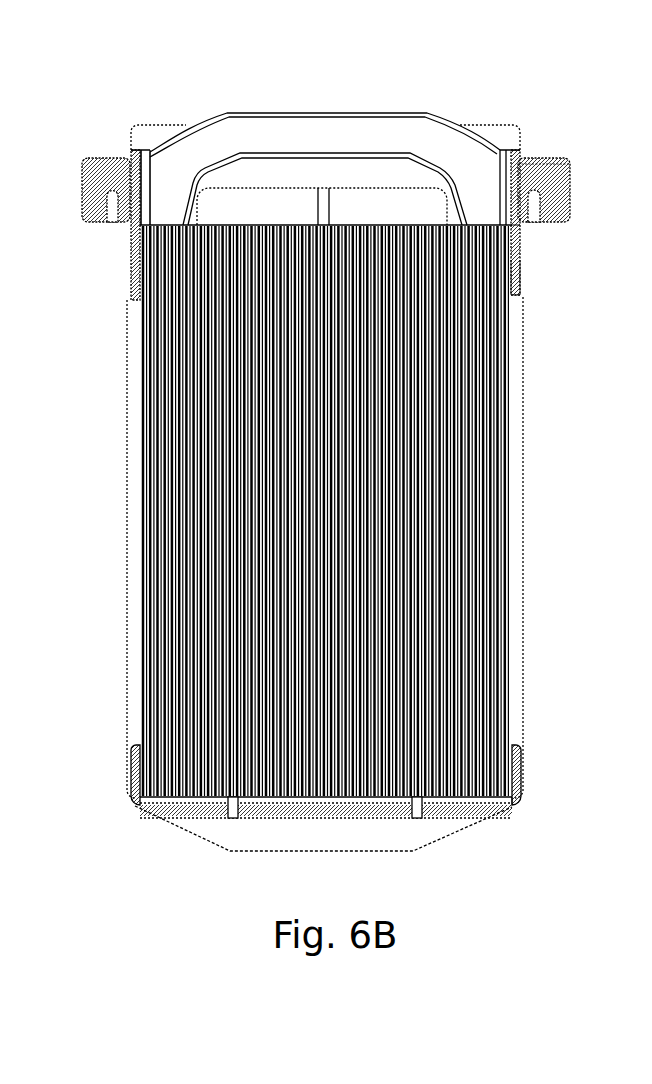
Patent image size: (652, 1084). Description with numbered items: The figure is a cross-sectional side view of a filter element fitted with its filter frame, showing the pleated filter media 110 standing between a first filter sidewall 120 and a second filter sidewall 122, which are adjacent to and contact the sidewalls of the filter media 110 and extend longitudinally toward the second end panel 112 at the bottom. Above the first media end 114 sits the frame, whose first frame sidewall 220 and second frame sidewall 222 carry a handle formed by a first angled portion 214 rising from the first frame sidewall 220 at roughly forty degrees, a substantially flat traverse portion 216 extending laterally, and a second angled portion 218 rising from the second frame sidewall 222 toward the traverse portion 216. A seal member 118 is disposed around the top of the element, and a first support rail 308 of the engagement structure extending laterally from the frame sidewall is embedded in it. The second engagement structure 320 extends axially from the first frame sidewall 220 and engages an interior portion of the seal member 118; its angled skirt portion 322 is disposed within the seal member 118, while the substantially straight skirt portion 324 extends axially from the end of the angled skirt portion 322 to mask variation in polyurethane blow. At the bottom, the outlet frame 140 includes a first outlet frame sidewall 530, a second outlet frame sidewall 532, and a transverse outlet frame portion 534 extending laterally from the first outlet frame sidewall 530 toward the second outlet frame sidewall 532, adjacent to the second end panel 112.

The filter media 110 is at (472, 665).
The second end panel 112 is at (240, 838).
The first media end 114 is at (168, 215).
The seal member 118 is at (572, 185).
The first filter sidewall 120 is at (517, 470).
The second filter sidewall 122 is at (130, 602).
The outlet frame 140 is at (523, 815).
The first angled portion 214 is at (447, 168).
The traverse portion 216 is at (320, 135).
The second angled portion 218 is at (180, 168).
The first frame sidewall 220 is at (514, 162).
The second frame sidewall 222 is at (132, 168).
The first support rail 308 is at (533, 178).
The second engagement structure 320 is at (528, 241).
The angled skirt portion 322 is at (525, 282).
The substantially straight skirt portion 324 is at (525, 308).
The first outlet frame sidewall 530 is at (521, 780).
The second outlet frame sidewall 532 is at (135, 785).
The transverse outlet frame portion 534 is at (182, 808).